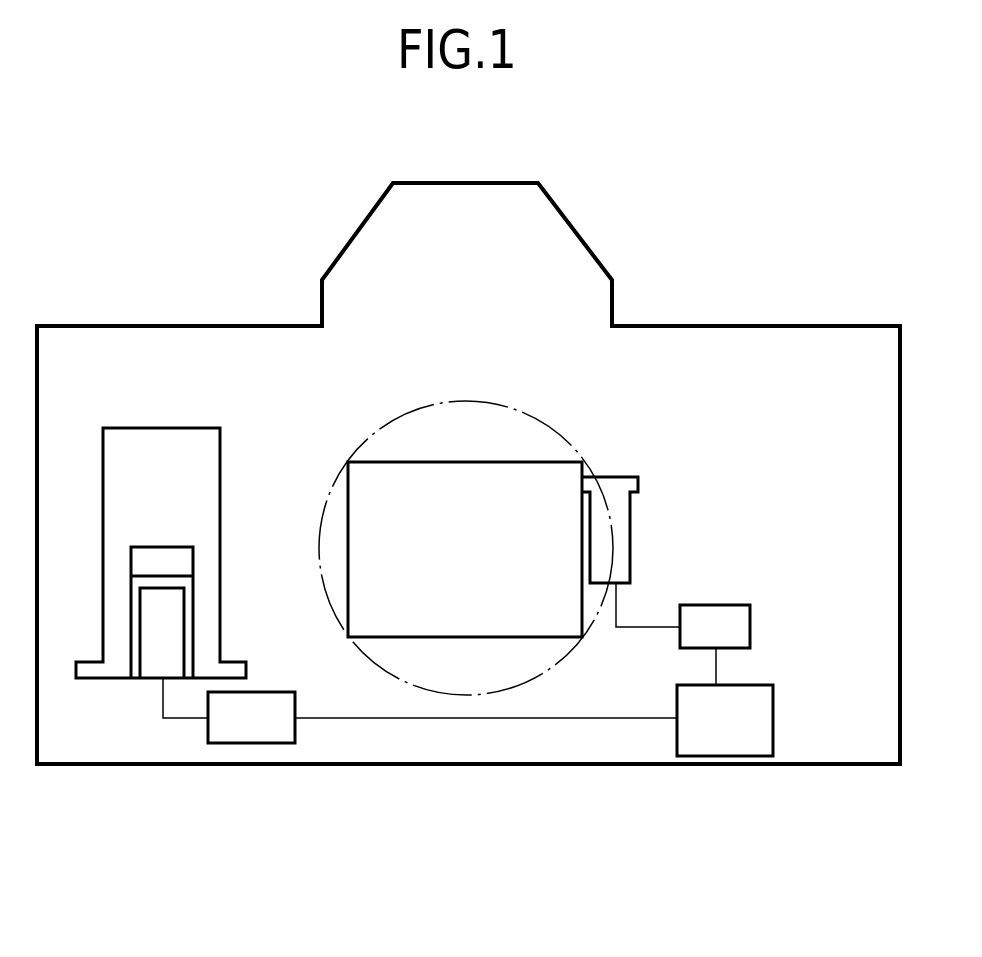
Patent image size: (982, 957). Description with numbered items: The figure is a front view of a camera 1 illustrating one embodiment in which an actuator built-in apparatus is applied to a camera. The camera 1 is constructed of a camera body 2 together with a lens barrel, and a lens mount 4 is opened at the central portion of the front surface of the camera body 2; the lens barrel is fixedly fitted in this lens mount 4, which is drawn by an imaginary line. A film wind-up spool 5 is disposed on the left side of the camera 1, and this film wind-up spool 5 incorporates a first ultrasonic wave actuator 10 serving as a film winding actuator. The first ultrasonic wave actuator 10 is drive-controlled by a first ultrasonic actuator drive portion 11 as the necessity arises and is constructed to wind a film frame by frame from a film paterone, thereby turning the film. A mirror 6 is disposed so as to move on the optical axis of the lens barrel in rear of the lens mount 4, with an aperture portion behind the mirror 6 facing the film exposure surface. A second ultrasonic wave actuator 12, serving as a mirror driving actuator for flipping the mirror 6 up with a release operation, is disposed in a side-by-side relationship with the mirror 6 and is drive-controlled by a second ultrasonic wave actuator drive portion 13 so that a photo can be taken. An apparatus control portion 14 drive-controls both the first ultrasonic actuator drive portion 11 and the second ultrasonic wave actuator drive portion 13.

The camera 1 is at (232, 252).
The camera body 2 is at (733, 327).
The lens mount 4 is at (538, 420).
The film wind-up spool 5 is at (210, 488).
The mirror 6 is at (565, 472).
The first ultrasonic wave actuator 10 is at (153, 673).
The first ultrasonic actuator drive portion 11 is at (253, 733).
The second ultrasonic wave actuator 12 is at (632, 533).
The second ultrasonic wave actuator drive portion 13 is at (745, 628).
The apparatus control portion 14 is at (715, 743).